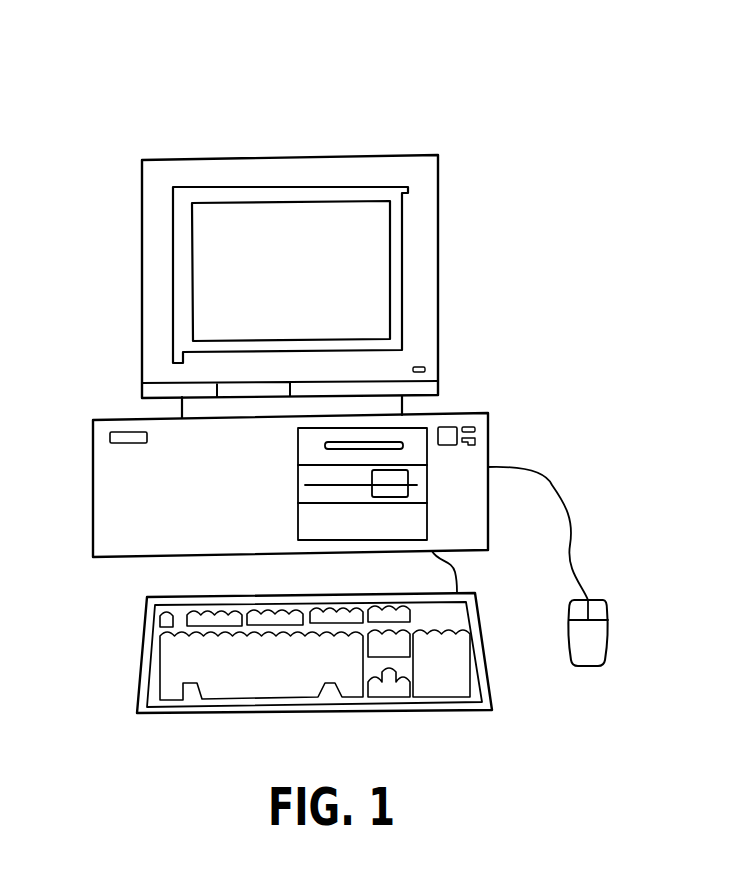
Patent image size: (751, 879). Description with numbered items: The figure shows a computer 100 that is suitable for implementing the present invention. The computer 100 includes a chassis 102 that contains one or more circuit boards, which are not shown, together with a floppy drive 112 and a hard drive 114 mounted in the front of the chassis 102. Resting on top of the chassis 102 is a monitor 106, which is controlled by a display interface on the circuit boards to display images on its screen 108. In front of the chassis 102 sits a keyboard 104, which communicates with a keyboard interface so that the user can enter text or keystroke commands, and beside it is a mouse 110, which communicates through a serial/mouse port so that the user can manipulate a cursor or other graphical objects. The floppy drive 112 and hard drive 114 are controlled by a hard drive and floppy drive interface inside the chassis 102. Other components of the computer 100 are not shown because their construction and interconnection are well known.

The computer 100 is at (440, 48).
The chassis 102 is at (94, 510).
The keyboard 104 is at (147, 633).
The monitor 106 is at (143, 160).
The screen 108 is at (220, 250).
The mouse 110 is at (597, 633).
The floppy drive 112 is at (398, 433).
The hard drive 114 is at (385, 525).